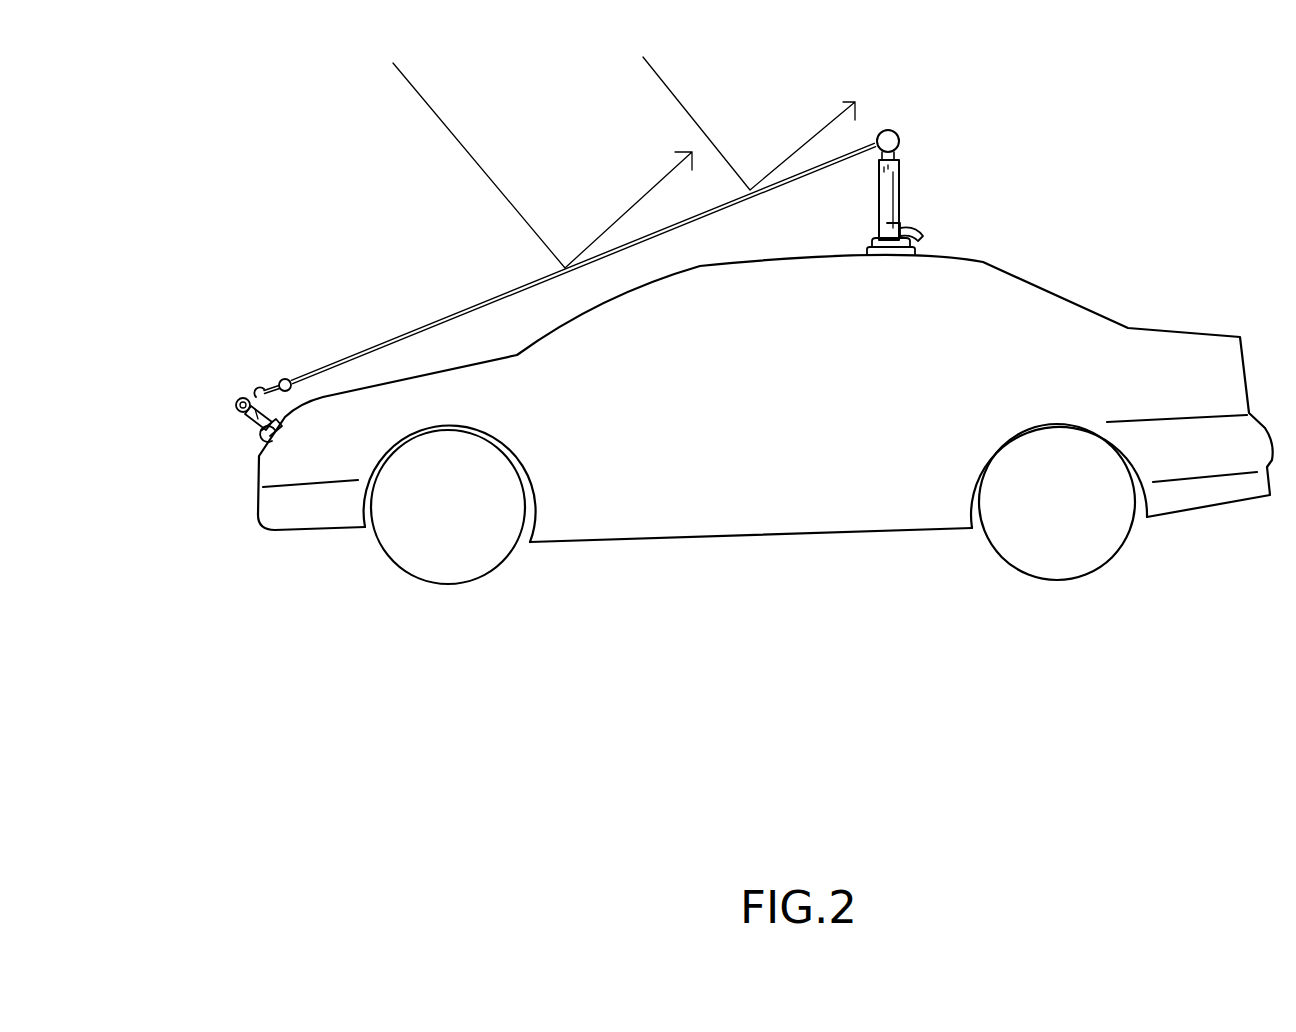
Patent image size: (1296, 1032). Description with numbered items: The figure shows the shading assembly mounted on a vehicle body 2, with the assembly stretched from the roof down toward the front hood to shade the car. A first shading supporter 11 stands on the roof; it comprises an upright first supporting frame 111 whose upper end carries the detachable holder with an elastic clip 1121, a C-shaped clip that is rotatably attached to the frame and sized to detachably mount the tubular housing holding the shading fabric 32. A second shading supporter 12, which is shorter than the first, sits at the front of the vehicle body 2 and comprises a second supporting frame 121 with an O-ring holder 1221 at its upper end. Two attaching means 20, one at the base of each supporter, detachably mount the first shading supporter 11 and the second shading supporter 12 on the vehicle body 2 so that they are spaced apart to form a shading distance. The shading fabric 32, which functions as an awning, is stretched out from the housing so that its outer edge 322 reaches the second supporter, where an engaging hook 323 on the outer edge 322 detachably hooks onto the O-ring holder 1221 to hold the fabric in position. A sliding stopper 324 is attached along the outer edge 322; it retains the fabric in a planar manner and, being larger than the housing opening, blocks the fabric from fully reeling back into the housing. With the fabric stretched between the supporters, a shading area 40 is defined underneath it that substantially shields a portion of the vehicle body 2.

The vehicle body 2 is at (998, 360).
The first shading supporter 11 is at (1044, 162).
The first supporting frame 111 is at (888, 198).
The elastic clip 1121 is at (900, 130).
The attaching means 20 is at (897, 242).
The second shading supporter 12 is at (179, 370).
The second supporting frame 121 is at (262, 423).
The O-ring holder 1221 is at (240, 403).
The shading fabric 32 is at (558, 258).
The outer edge 322 is at (279, 386).
The engaging hook 323 is at (240, 403).
The sliding stopper 324 is at (286, 379).
The shading area 40 is at (744, 245).